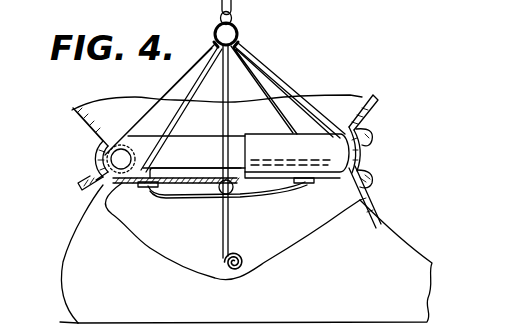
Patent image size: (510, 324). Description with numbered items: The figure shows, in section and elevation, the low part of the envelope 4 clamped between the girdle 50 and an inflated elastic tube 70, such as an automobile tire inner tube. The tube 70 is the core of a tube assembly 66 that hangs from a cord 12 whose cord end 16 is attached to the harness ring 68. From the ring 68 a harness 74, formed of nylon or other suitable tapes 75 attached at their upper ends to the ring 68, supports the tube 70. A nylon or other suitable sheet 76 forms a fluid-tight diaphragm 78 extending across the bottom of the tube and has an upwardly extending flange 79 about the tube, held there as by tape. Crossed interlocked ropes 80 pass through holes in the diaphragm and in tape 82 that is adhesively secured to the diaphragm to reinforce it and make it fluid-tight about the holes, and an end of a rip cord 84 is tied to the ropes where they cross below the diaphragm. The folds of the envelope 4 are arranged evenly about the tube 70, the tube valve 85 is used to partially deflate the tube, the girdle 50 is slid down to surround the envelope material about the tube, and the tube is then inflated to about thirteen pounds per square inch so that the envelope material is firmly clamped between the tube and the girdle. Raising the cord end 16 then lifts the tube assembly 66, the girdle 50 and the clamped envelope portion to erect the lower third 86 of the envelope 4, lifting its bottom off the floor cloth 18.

The envelope 4 is at (359, 95).
The cord 12 is at (235, 8).
The cord end 16 is at (218, 18).
The floor cloth 18 is at (58, 322).
The girdle 50 is at (366, 148).
The tube assembly 66 is at (270, 60).
The harness ring 68 is at (239, 34).
The elastic tube 70 is at (173, 148).
The harness 74 is at (295, 82).
The tapes 75 is at (182, 79).
The sheet 76 is at (355, 173).
The diaphragm 78 is at (116, 185).
The flange 79 is at (268, 134).
The ropes 80 is at (215, 167).
The tape 82 is at (148, 188).
The rip cord 84 is at (230, 242).
The tube valve 85 is at (137, 149).
The lower third 86 is at (400, 263).